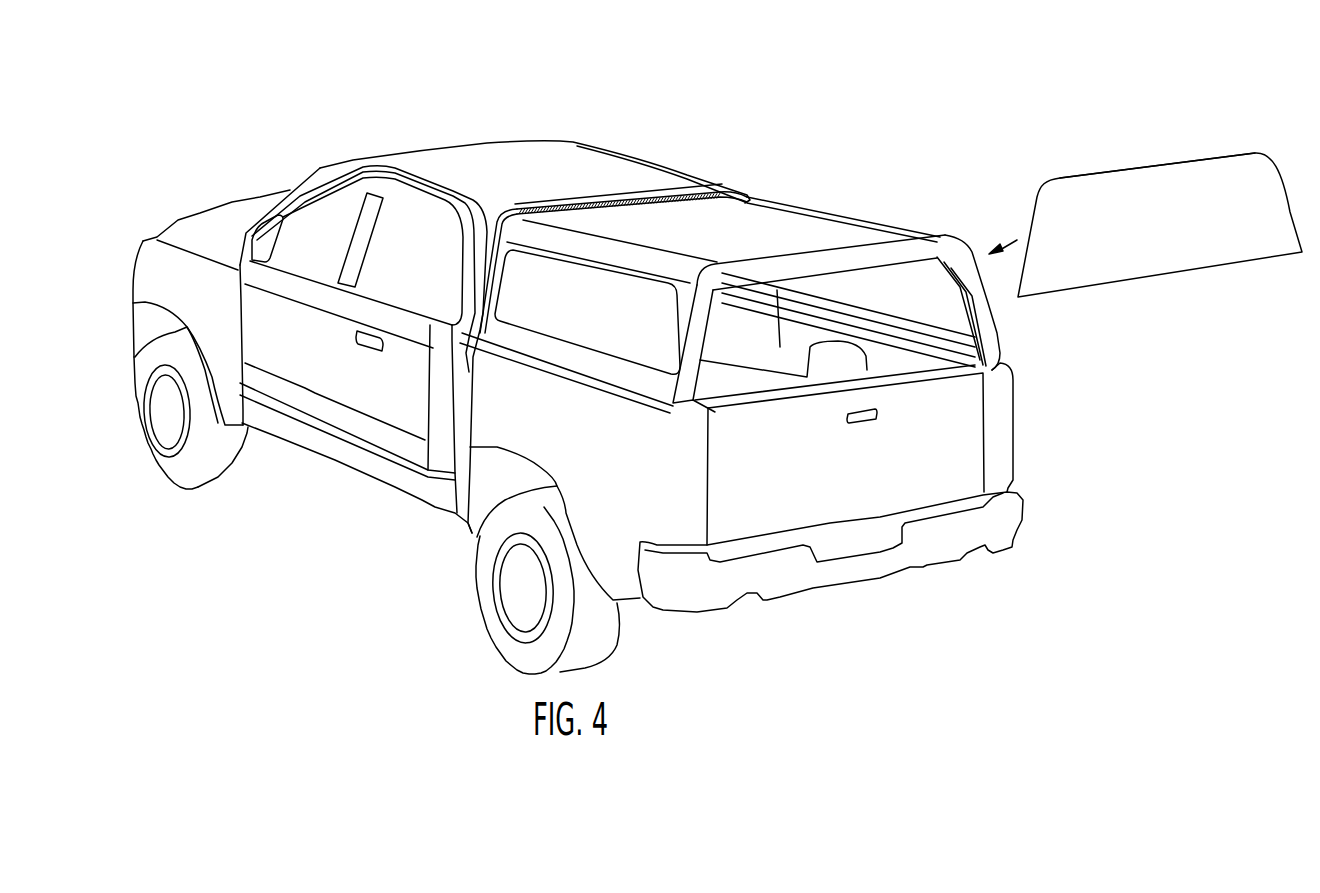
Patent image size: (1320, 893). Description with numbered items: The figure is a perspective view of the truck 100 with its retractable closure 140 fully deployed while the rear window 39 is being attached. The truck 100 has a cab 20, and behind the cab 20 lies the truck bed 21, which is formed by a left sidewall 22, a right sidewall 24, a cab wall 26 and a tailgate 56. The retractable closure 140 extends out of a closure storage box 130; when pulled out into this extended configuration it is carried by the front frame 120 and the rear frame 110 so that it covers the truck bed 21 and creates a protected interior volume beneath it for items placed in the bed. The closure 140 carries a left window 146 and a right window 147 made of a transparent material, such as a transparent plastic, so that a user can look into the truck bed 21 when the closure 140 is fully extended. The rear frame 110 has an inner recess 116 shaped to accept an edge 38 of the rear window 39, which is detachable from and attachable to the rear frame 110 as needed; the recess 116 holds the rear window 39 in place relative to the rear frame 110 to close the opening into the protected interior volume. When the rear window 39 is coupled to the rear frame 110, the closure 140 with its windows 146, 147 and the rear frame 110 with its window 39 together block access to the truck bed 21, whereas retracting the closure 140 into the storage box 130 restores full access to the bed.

The truck 100 is at (138, 122).
The cab 20 is at (440, 160).
The left sidewall 22 is at (463, 357).
The front frame 120 is at (622, 192).
The retractable closure 140 is at (650, 208).
The left window 146 is at (573, 277).
The rear frame 110 is at (680, 404).
The cab wall 26 is at (737, 325).
The truck bed 21 is at (758, 357).
The right sidewall 24 is at (858, 268).
The right window 147 is at (868, 280).
The closure storage box 130 is at (1001, 340).
The inner recess 116 is at (963, 306).
The tailgate 56 is at (977, 443).
The edge 38 is at (1067, 172).
The rear window 39 is at (1157, 172).